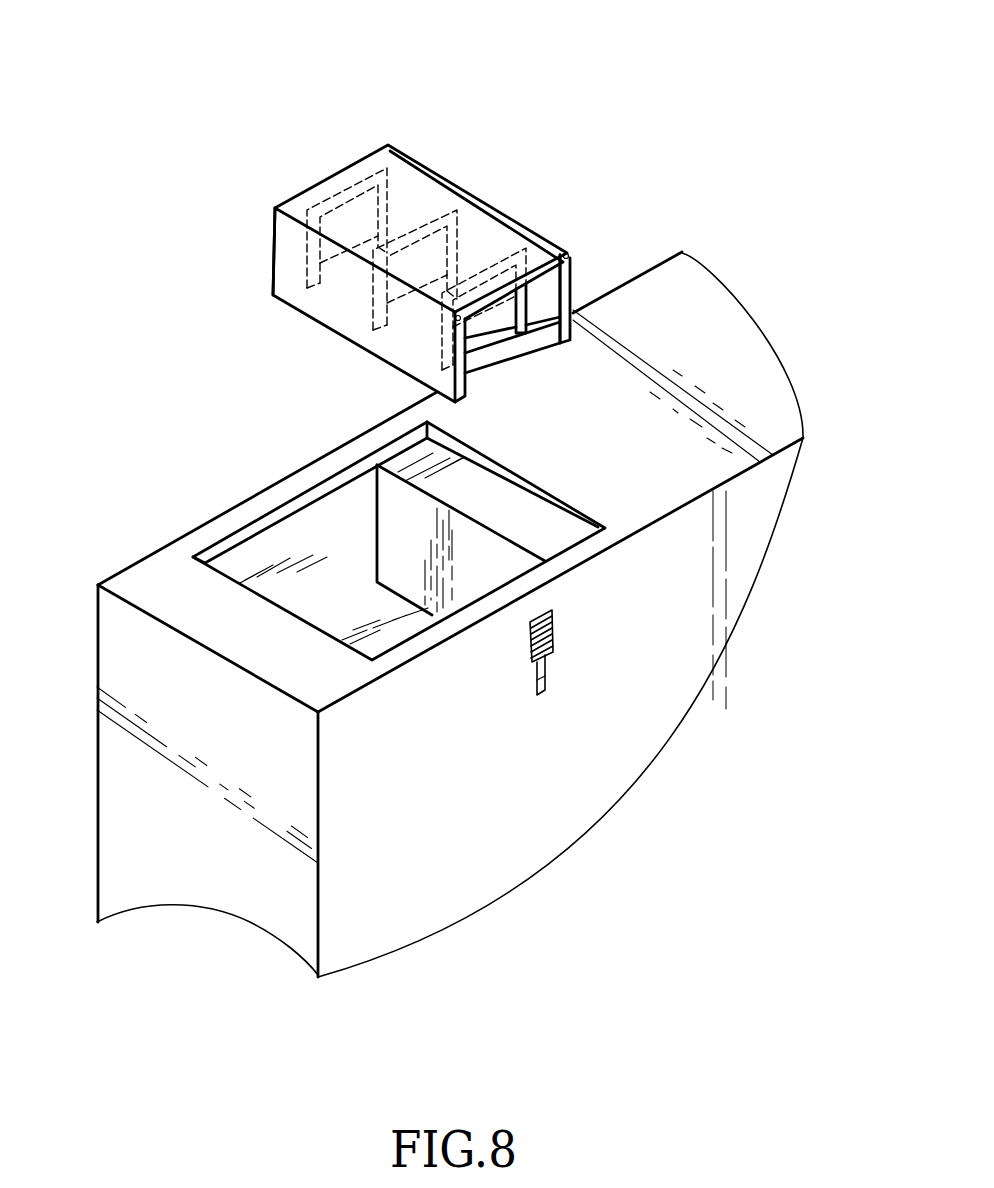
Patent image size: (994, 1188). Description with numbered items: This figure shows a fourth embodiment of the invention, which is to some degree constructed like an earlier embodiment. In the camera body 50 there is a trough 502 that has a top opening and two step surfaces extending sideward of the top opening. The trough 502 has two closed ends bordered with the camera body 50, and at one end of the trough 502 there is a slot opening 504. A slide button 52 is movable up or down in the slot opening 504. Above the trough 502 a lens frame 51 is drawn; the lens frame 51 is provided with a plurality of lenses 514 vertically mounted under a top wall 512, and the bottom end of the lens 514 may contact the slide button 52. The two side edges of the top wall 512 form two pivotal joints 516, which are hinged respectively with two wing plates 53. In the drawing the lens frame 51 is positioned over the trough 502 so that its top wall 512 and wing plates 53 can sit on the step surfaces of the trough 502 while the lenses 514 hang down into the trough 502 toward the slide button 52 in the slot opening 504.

The camera body 50 is at (743, 348).
The lens frame 51 is at (415, 201).
The slide button 52 is at (530, 647).
The wing plate 53 is at (290, 278).
The trough 502 is at (399, 586).
The slot opening 504 is at (547, 675).
The top wall 512 is at (337, 196).
The lens 514 is at (367, 325).
The pivotal joint 516 is at (569, 256).